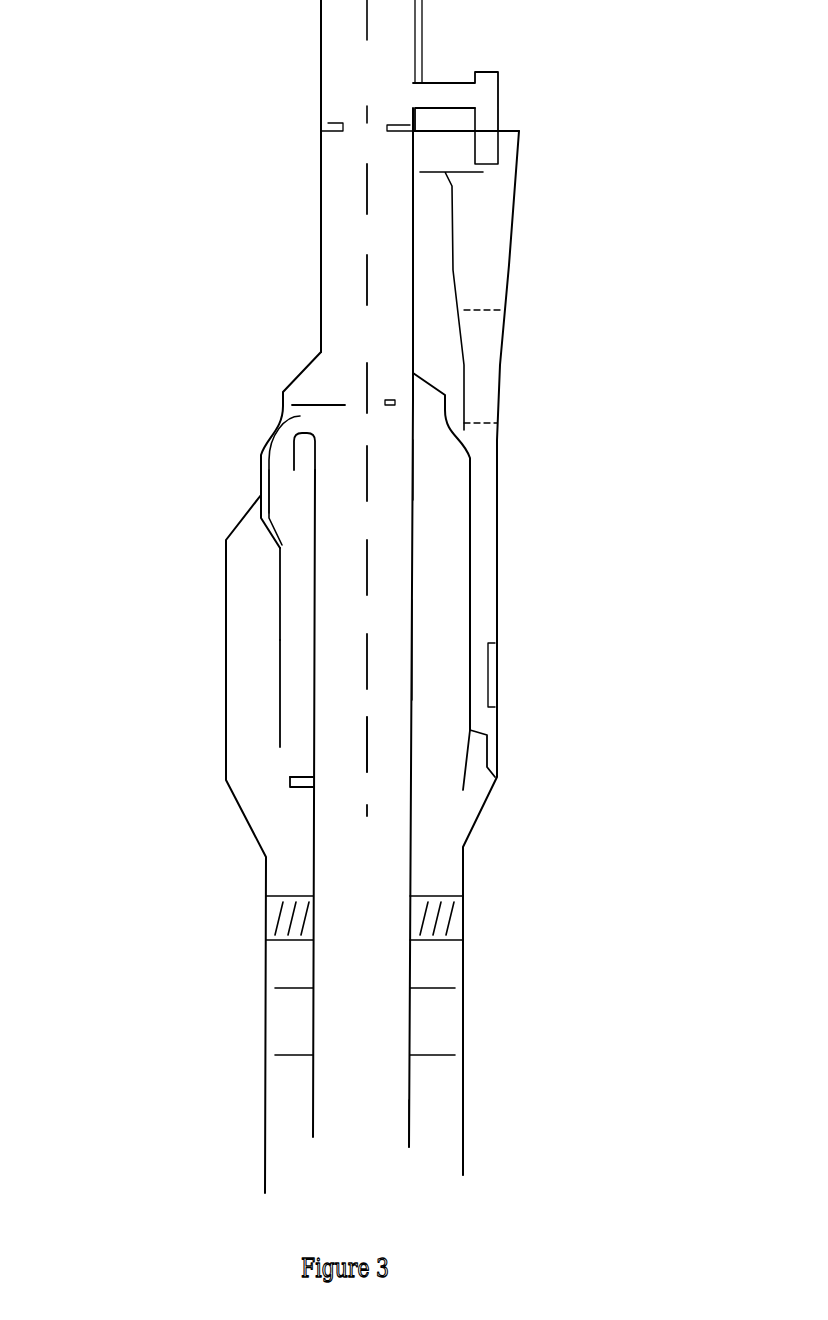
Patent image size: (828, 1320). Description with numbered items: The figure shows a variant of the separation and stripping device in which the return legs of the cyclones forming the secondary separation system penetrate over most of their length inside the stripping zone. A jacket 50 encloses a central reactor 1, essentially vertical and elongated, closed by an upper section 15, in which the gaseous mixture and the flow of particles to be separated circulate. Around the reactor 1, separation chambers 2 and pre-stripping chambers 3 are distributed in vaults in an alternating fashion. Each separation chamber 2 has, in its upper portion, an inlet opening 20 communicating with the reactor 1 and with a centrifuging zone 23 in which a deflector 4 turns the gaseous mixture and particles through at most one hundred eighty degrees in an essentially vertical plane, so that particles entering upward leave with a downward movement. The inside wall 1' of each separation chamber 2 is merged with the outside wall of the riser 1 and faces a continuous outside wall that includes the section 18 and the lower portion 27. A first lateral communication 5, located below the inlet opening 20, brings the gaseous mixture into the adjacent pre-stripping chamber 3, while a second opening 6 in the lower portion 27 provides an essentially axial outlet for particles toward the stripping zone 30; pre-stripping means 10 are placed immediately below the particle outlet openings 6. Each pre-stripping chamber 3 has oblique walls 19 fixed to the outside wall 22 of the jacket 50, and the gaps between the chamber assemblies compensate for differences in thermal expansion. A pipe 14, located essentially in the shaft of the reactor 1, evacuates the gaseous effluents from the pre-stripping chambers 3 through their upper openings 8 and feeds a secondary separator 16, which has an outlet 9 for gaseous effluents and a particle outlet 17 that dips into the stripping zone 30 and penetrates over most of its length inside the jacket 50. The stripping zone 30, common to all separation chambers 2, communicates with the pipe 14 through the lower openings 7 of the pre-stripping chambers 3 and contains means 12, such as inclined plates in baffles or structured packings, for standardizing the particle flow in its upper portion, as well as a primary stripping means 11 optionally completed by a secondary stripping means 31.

The central reactor 1 is at (363, 773).
The inside wall 1' is at (283, 912).
The separation chamber 2 is at (288, 497).
The pre-stripping chamber 3 is at (437, 513).
The deflector 4 is at (290, 458).
The first lateral communication 5 is at (418, 463).
The second opening 6 is at (293, 757).
The lower openings 7 is at (417, 650).
The upper openings 8 is at (412, 387).
The outlet of gaseous effluents 9 is at (381, 61).
The pre-stripping means 10 is at (298, 785).
The primary stripping means 11 is at (424, 988).
The means for standardizing the flow of particles 12 is at (427, 920).
The pipe for evacuating the mixture 14 is at (367, 408).
The upper section 15 is at (390, 405).
The secondary separator 16 is at (483, 174).
The particle outlet 17 is at (478, 725).
The outside wall 18 is at (276, 533).
The oblique walls 19 is at (448, 580).
The inlet opening 20 is at (310, 412).
The outside wall of the jacket 22 is at (557, 653).
The centrifuging zone 23 is at (285, 441).
The lower portion 27 is at (295, 668).
The stripping zone 30 is at (425, 1155).
The secondary stripping means 31 is at (428, 1057).
The jacket 50 is at (258, 468).